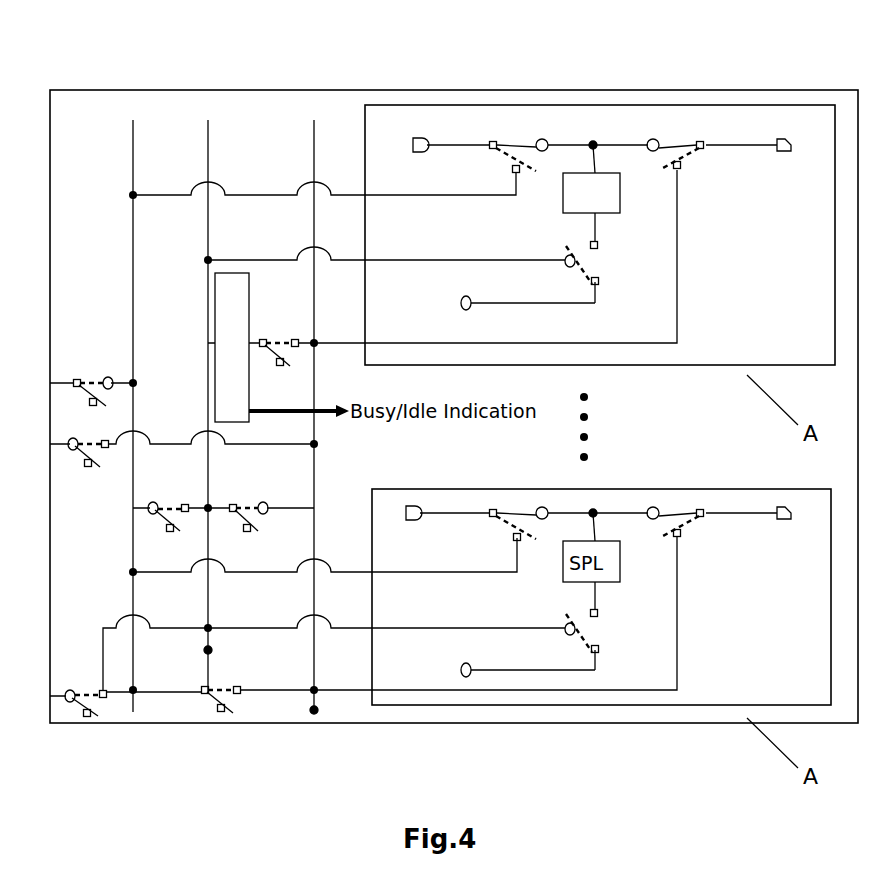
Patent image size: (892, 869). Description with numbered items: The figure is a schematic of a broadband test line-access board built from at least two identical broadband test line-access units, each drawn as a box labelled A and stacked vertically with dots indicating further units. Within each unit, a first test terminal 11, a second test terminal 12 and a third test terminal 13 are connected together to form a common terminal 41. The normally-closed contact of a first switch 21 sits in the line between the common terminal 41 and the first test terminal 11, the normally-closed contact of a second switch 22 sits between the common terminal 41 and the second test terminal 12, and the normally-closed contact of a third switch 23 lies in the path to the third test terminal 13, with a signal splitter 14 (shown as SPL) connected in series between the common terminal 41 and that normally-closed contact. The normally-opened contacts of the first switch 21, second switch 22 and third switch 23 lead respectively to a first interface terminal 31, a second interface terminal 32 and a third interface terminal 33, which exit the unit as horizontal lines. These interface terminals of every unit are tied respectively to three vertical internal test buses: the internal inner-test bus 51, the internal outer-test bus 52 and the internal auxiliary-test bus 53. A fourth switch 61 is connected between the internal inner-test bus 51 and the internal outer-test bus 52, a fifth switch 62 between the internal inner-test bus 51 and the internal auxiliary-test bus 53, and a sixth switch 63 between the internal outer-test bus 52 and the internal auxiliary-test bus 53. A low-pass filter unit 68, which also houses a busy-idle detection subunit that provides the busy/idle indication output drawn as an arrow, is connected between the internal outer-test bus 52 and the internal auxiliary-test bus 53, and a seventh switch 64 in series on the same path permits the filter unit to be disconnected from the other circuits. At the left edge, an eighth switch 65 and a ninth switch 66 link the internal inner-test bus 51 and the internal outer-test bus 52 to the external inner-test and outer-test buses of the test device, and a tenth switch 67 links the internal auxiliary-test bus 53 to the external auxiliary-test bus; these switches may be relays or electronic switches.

The first test terminal 11 is at (425, 137).
The second test terminal 12 is at (786, 137).
The third test terminal 13 is at (468, 310).
The signal splitter 14 is at (620, 176).
The first switch 21 is at (521, 138).
The second switch 22 is at (682, 140).
The third switch 23 is at (598, 265).
The first interface terminal 31 is at (364, 194).
The second interface terminal 32 is at (364, 342).
The third interface terminal 33 is at (364, 260).
The common terminal 41 is at (597, 140).
The internal inner-test bus 51 is at (133, 712).
The internal outer-test bus 52 is at (314, 710).
The internal auxiliary-test bus 53 is at (208, 650).
The fourth switch 61 is at (240, 705).
The fifth switch 62 is at (156, 517).
The sixth switch 63 is at (256, 505).
The seventh switch 64 is at (288, 355).
The eighth switch 65 is at (95, 378).
The ninth switch 66 is at (95, 463).
The tenth switch 67 is at (92, 694).
The low-pass filter unit 68 is at (226, 281).